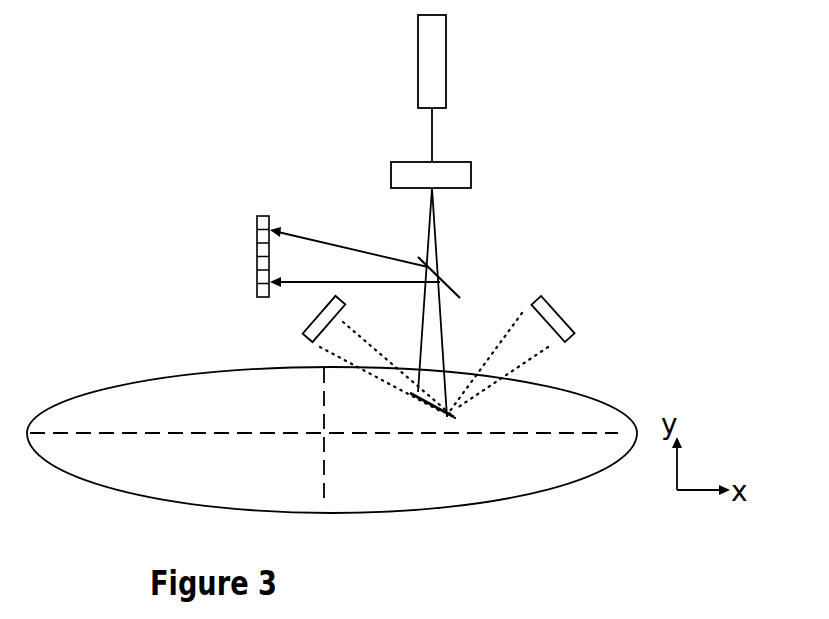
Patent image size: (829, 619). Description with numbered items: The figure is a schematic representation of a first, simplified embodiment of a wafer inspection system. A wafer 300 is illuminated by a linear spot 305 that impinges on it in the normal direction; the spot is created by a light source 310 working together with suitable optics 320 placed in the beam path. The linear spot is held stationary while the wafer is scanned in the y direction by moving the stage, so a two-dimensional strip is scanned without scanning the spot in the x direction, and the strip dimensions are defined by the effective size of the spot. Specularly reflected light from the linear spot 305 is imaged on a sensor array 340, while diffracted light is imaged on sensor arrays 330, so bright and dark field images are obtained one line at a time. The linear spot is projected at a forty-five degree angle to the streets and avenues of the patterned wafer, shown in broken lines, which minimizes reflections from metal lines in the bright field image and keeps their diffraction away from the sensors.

The wafer 300 is at (208, 477).
The linear spot 305 is at (430, 407).
The light source 310 is at (431, 67).
The optics 320 is at (471, 172).
The sensor arrays 330 is at (305, 334).
The sensor array 340 is at (257, 216).